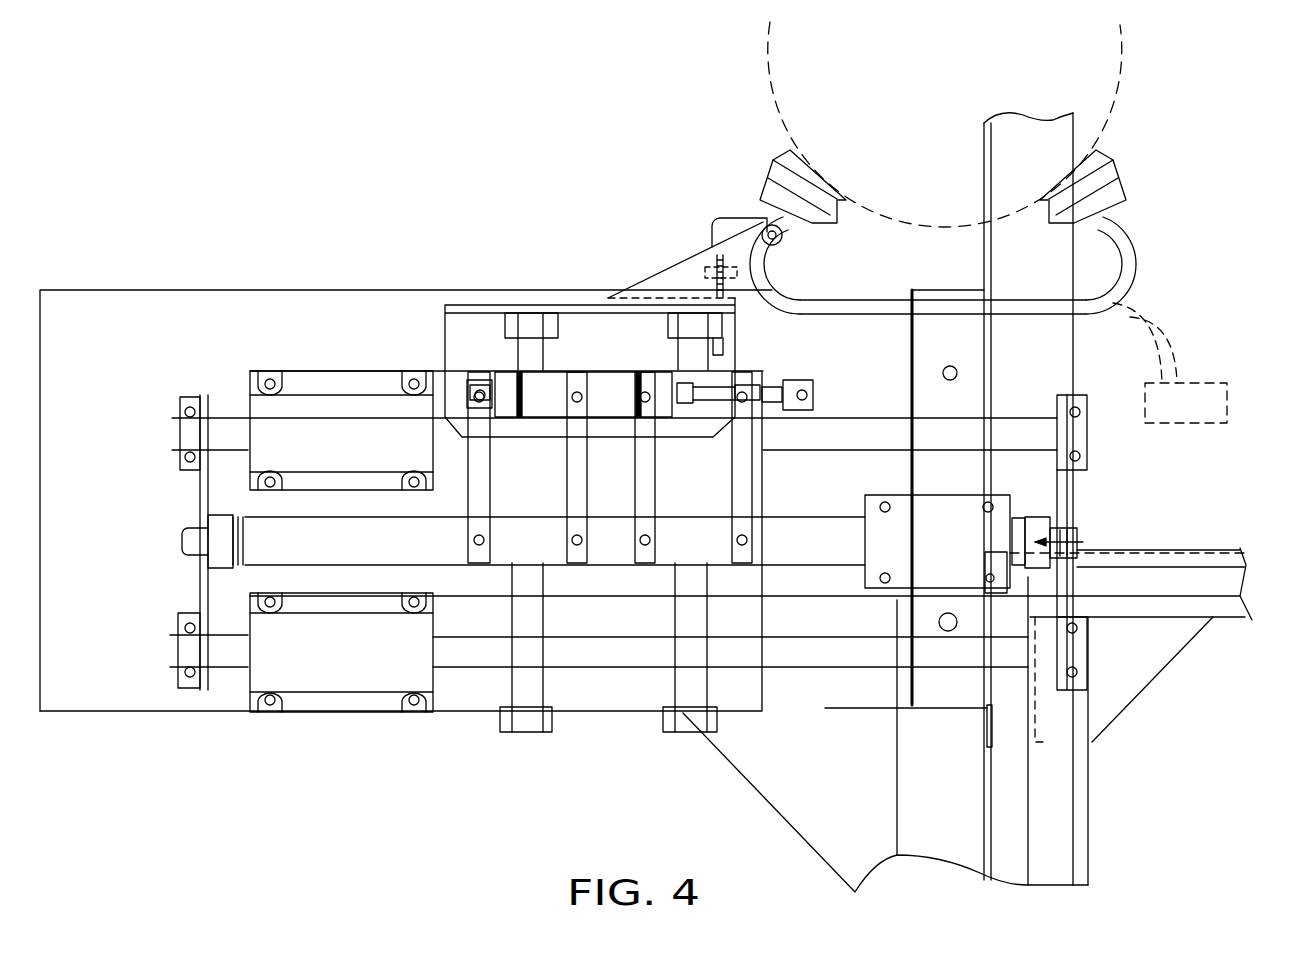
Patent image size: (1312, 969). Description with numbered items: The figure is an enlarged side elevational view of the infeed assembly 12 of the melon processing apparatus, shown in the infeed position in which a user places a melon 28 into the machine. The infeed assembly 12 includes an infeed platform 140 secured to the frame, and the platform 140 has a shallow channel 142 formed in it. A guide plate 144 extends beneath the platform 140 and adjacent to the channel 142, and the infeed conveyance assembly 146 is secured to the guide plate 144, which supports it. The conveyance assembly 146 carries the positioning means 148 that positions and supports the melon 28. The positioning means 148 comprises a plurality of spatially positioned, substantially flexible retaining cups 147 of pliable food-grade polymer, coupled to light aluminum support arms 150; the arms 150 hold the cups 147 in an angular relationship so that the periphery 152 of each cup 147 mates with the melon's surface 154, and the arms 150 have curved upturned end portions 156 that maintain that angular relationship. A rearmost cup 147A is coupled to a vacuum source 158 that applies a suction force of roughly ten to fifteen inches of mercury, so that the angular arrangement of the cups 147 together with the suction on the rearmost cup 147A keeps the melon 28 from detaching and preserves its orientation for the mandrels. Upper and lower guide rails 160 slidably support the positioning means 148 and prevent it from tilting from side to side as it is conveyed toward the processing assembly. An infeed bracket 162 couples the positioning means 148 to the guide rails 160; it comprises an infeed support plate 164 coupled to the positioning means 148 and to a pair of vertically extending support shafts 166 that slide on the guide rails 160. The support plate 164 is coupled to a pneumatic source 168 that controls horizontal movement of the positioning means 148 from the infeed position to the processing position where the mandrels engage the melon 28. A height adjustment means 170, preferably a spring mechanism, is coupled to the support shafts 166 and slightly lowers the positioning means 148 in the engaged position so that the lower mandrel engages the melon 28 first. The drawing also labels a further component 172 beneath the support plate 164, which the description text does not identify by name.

The infeed assembly 12 is at (458, 250).
The melon 28 is at (1120, 73).
The infeed platform 140 is at (110, 290).
The shallow channel 142 is at (912, 292).
The guide plate 144 is at (401, 509).
The infeed conveyance assembly 146 is at (780, 463).
The retaining cups 147 is at (1105, 184).
The rearmost cup 147A is at (792, 153).
The positioning means 148 is at (890, 188).
The support arms 150 is at (840, 308).
The periphery 152 is at (820, 177).
The melon's surface 154 is at (1113, 104).
The curved upturned end portions 156 is at (763, 287).
The vacuum source 158 is at (1205, 383).
The guide rails 160 is at (818, 636).
The infeed bracket 162 is at (588, 322).
The infeed support plate 164 is at (682, 264).
The vertically extending support shafts 166 is at (680, 690).
The pneumatic source 168 is at (312, 397).
The height adjustment means 170 is at (755, 378).
The pneumatic cylinder 172 is at (535, 492).